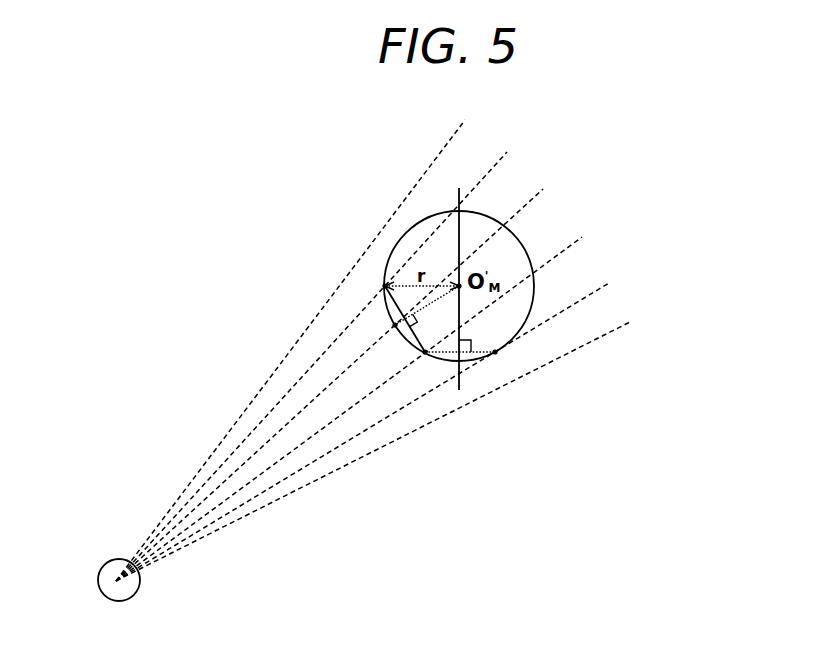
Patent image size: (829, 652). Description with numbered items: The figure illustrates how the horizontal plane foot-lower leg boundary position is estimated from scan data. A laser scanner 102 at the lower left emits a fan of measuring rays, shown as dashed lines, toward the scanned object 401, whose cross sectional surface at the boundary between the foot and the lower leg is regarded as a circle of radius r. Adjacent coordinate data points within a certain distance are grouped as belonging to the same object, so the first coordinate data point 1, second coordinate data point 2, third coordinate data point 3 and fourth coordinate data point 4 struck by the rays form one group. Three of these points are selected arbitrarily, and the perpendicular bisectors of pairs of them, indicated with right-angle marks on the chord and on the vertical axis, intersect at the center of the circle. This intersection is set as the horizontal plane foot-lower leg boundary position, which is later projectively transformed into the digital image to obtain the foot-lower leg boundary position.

The laser scanner 102 is at (133, 591).
The measurement line / measured object 401 is at (532, 305).
The coordinate data point d1 1 is at (372, 279).
The coordinate data point d2 2 is at (398, 341).
The coordinate data point d3 3 is at (428, 366).
The coordinate data point d4 4 is at (497, 366).